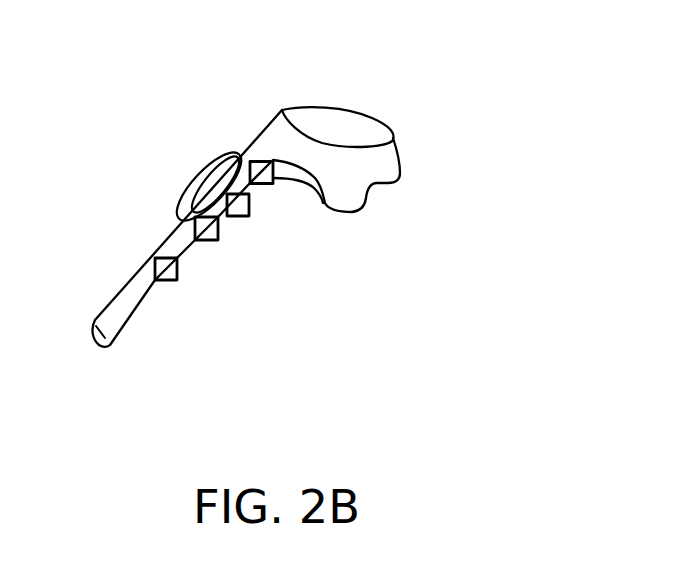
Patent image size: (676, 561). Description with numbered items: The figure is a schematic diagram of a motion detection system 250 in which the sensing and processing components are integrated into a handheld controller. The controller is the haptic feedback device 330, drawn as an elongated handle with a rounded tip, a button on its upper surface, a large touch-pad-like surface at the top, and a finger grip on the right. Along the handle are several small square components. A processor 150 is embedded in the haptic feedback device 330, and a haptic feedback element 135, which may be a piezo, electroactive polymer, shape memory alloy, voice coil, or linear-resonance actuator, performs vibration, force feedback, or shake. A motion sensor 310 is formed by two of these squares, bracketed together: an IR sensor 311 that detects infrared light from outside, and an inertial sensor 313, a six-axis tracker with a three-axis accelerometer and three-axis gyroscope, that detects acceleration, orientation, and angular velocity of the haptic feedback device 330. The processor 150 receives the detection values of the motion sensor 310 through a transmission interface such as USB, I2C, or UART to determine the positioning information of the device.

The motion detection system 250 is at (473, 424).
The haptic feedback device 330 is at (333, 122).
The processor 150 is at (168, 258).
The haptic feedback element 135 is at (263, 184).
The motion sensor 310 is at (240, 289).
The IR sensor 311 is at (207, 241).
The inertial sensor 313 is at (237, 217).